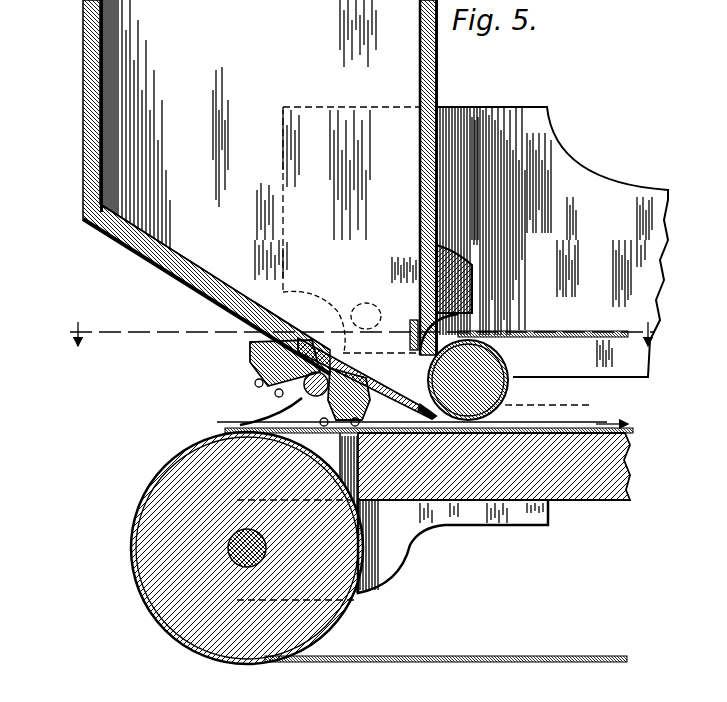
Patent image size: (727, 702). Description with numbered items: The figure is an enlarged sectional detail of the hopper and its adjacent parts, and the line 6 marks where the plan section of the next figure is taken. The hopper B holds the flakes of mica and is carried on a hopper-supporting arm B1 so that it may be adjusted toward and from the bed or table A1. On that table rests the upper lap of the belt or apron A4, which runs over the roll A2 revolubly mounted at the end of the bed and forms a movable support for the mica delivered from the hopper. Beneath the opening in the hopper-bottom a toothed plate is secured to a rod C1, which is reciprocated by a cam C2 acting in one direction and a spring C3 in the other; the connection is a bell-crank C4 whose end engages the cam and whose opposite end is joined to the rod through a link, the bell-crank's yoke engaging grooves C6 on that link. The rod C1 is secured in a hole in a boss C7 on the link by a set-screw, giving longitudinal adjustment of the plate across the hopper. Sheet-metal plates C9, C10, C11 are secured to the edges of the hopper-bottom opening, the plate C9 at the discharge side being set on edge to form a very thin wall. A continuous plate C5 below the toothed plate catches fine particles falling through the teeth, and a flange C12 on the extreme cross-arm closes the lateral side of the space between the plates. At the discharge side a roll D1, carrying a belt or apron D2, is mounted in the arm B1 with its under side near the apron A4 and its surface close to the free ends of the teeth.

The hopper B is at (185, 142).
The hopper-supporting arm B1 is at (568, 183).
The roll D1 is at (488, 396).
The belt or apron D2 is at (560, 340).
The bed or table A1 is at (582, 488).
The roll A2 is at (170, 575).
The belt or apron A4 is at (578, 428).
The rod C1 is at (388, 351).
The cam C2 is at (378, 403).
The spring C3 is at (318, 398).
The bell-crank C4 is at (403, 418).
The continuous plate C5 is at (332, 398).
The grooves C6 is at (358, 423).
The boss C7 is at (340, 387).
The sheet-metal plate C9 is at (420, 328).
The sheet-metal plate C10 is at (308, 342).
The sheet-metal plate C11 is at (338, 345).
The flange C12 is at (437, 428).
The section line 6 is at (356, 335).